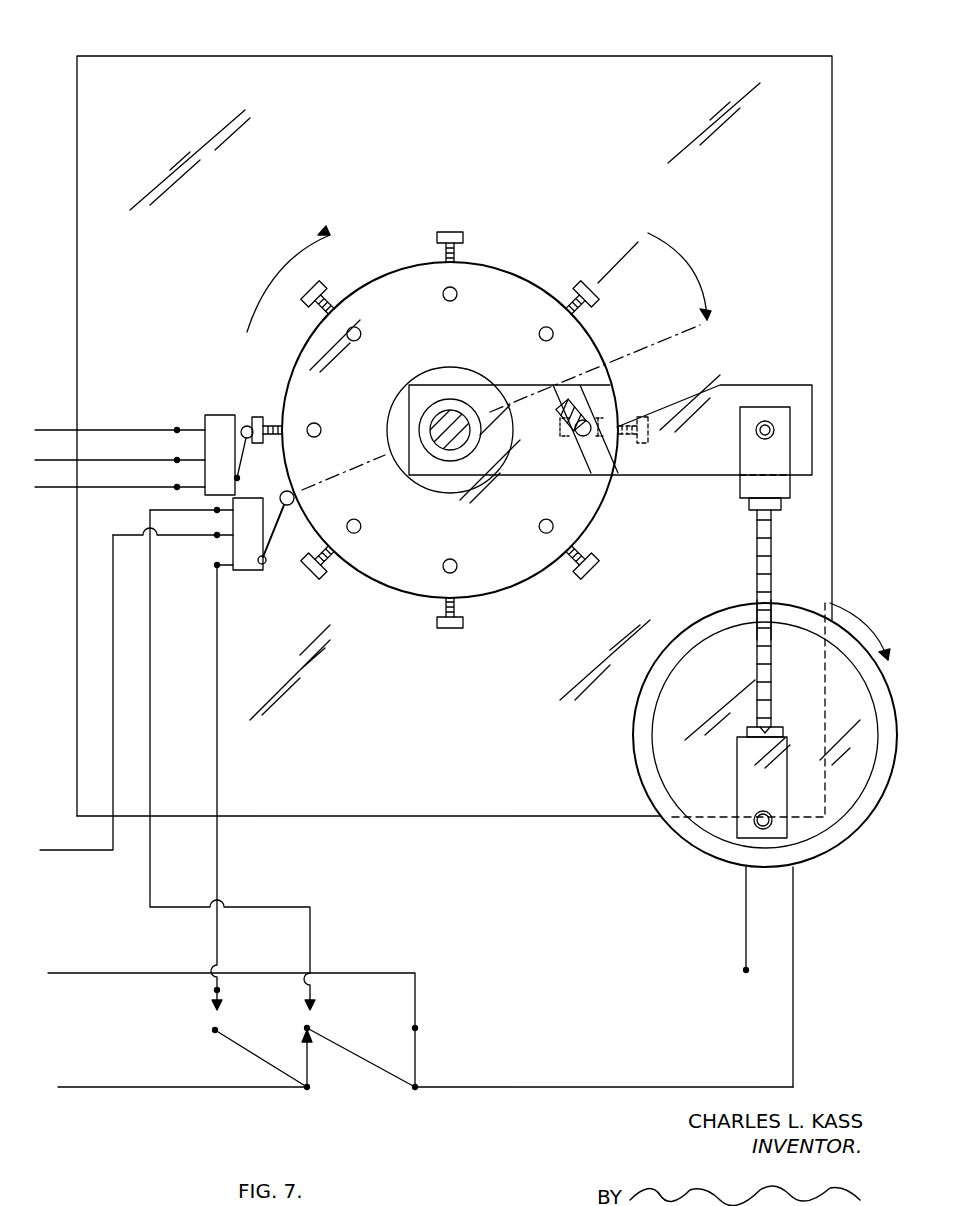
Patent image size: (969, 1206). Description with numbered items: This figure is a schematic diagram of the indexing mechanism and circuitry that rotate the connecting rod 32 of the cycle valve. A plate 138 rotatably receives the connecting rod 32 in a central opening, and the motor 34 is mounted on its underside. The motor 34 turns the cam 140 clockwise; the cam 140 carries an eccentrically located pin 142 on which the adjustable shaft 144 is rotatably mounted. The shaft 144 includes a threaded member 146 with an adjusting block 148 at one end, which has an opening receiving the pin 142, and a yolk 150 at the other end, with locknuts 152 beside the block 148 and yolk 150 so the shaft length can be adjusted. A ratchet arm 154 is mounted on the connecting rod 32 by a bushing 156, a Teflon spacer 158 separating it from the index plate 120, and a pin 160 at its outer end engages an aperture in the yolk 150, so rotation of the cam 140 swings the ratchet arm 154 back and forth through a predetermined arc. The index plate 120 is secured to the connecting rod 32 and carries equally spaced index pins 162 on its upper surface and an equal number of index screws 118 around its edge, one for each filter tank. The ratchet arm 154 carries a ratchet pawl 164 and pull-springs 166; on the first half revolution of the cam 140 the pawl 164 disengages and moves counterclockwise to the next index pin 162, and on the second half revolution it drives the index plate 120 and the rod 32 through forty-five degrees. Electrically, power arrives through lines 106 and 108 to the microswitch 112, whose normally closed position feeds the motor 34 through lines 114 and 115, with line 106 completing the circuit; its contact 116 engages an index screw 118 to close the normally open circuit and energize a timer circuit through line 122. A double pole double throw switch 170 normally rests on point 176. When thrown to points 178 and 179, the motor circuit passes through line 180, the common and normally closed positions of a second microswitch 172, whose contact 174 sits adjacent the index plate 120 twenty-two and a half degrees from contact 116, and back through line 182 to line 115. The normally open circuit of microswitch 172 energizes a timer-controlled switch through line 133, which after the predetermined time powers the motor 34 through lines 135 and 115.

The plate 138 is at (618, 72).
The index plate 120 is at (520, 300).
The index screws 118 is at (452, 237).
The index pins 162 is at (380, 315).
The spacer 158 is at (395, 422).
The bushing 156 is at (447, 400).
The connecting rod 32 is at (462, 418).
The ratchet arm 154 is at (692, 468).
The ratchet pawl 164 is at (569, 405).
The pull-springs 166 is at (572, 434).
The yolk 150 is at (792, 477).
The pin 160 is at (766, 420).
The locknuts 152 is at (772, 510).
The adjustable shaft 144 is at (756, 549).
The threaded member 146 is at (765, 612).
The motor 34 is at (835, 830).
The cam 140 is at (665, 726).
The adjusting block 148 is at (740, 768).
The eccentrically located pin 142 is at (770, 815).
The line 106 is at (745, 905).
The microswitch 112 is at (213, 415).
The contact 116 is at (246, 424).
The line 114 is at (40, 430).
The line 122 is at (111, 451).
The line 108 is at (64, 490).
The microswitch 172 is at (258, 572).
The contact 174 is at (286, 491).
The line 182 is at (152, 772).
The line 180 is at (220, 785).
The line 133 is at (80, 853).
The line 135 is at (70, 945).
The point 178 is at (210, 1000).
The point 179 is at (312, 1004).
The point 176 is at (313, 1047).
The line 115 is at (598, 1087).
The switch 170 is at (205, 1107).